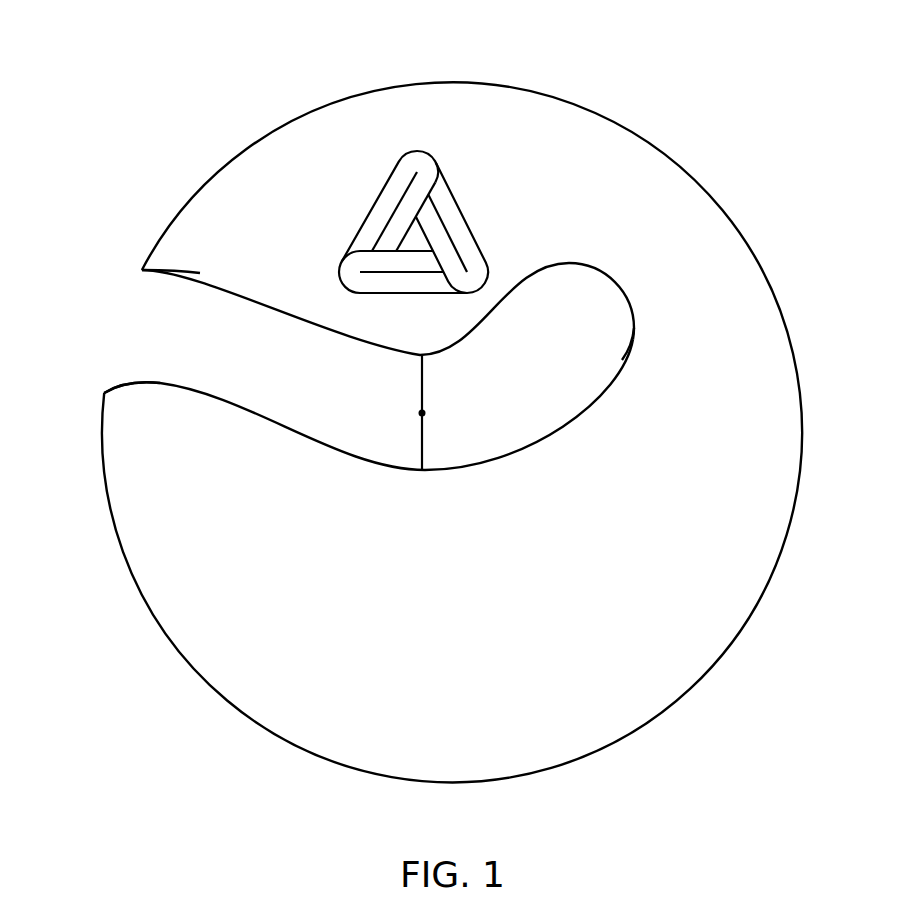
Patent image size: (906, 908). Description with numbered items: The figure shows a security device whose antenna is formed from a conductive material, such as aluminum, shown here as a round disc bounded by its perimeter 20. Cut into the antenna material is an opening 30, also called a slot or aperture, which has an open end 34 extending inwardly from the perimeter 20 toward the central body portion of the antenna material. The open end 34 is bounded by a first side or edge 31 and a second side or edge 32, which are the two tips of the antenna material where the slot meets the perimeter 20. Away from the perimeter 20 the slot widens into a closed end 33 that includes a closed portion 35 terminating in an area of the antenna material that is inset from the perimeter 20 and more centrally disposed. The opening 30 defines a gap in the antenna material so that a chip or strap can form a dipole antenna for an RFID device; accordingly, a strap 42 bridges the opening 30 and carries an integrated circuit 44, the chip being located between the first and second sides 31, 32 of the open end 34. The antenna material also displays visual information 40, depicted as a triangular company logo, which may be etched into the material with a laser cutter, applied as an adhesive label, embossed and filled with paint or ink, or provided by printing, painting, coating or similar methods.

The perimeter 20 is at (333, 103).
The opening 30 is at (103, 391).
The first side 31 is at (108, 394).
The second side 32 is at (150, 268).
The closed end 33 is at (633, 325).
The open end 34 is at (140, 270).
The closed portion 35 is at (573, 265).
The visual information 40 is at (518, 217).
The strap 42 is at (423, 470).
The integrated circuit 44 is at (426, 413).